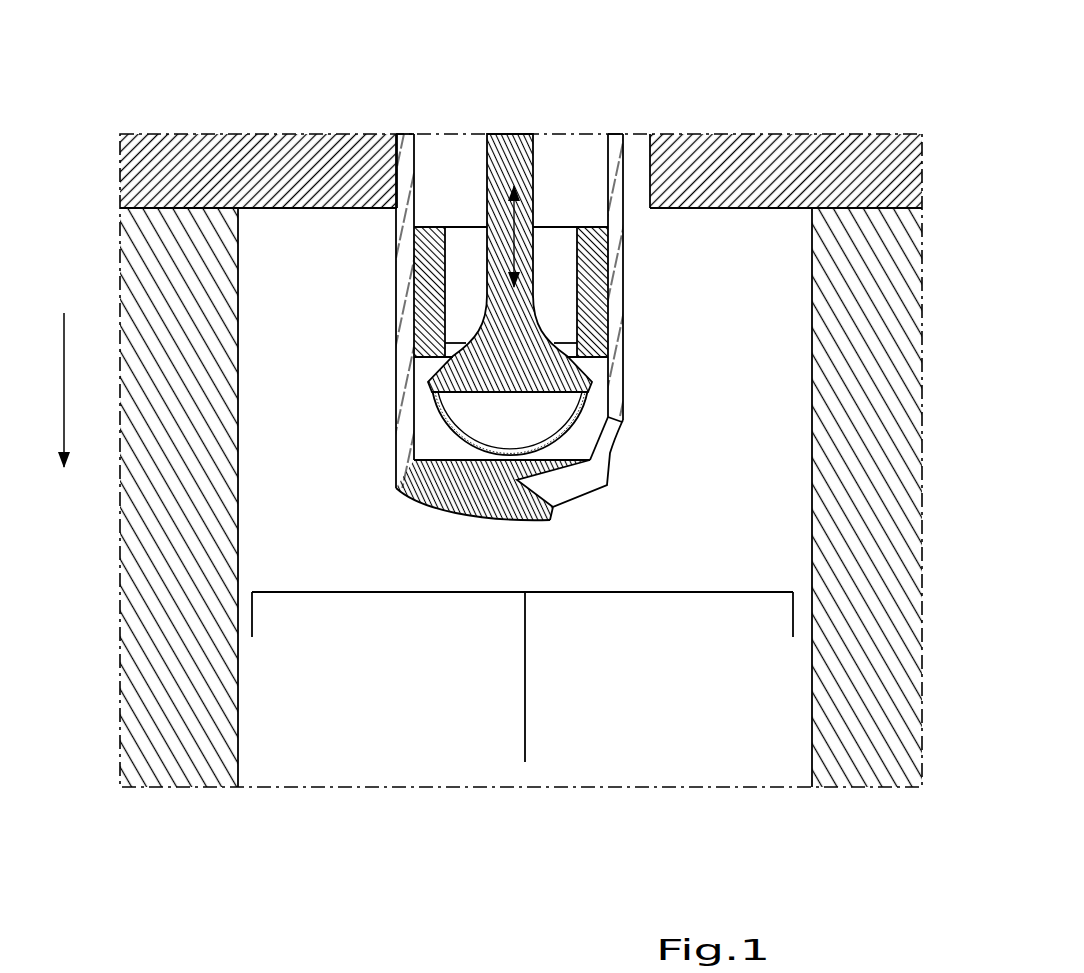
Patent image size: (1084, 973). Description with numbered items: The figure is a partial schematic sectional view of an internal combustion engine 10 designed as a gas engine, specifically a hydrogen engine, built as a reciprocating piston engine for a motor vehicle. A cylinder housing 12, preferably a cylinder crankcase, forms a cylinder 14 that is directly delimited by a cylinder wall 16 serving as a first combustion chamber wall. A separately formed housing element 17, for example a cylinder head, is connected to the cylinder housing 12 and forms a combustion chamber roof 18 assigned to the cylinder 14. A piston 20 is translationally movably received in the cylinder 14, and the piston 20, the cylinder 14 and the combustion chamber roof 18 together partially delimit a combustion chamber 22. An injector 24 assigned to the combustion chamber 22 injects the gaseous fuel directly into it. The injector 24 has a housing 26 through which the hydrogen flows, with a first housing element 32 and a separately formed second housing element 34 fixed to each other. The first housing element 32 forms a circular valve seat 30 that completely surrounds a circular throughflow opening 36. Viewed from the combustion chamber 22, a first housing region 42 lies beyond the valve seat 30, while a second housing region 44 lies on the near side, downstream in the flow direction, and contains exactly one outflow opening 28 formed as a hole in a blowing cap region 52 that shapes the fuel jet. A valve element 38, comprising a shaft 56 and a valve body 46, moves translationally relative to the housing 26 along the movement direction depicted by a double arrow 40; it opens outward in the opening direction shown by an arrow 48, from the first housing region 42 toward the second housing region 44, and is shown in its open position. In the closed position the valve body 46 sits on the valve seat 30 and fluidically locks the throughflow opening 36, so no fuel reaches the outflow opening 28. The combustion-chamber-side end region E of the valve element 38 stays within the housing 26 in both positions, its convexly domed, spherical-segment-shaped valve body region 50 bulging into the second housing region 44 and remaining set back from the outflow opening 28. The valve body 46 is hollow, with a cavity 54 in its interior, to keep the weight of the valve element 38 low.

The internal combustion engine 10 is at (842, 113).
The cylinder housing 12 is at (150, 780).
The cylinder 14 is at (766, 770).
The cylinder wall 16 is at (811, 472).
The housing element 17 is at (122, 170).
The combustion chamber roof 18 is at (328, 210).
The piston 20 is at (357, 593).
The combustion chamber 22 is at (730, 299).
The injector 24 is at (614, 142).
The housing 26 is at (400, 157).
The outflow opening 28 is at (585, 483).
The valve seat 30 is at (478, 340).
The first housing element 32 is at (450, 347).
The second housing element 34 is at (408, 302).
The throughflow opening 36 is at (568, 337).
The valve element 38 is at (514, 151).
The double arrow 40 is at (516, 228).
The first housing region 42 is at (568, 154).
The second housing region 44 is at (449, 448).
The valve body 46 is at (574, 402).
The arrow 48 is at (64, 383).
The valve body region 50 is at (512, 459).
The blowing cap region 52 is at (473, 523).
The cavity 54 is at (510, 412).
The shaft 56 is at (500, 150).
The end region E is at (427, 423).